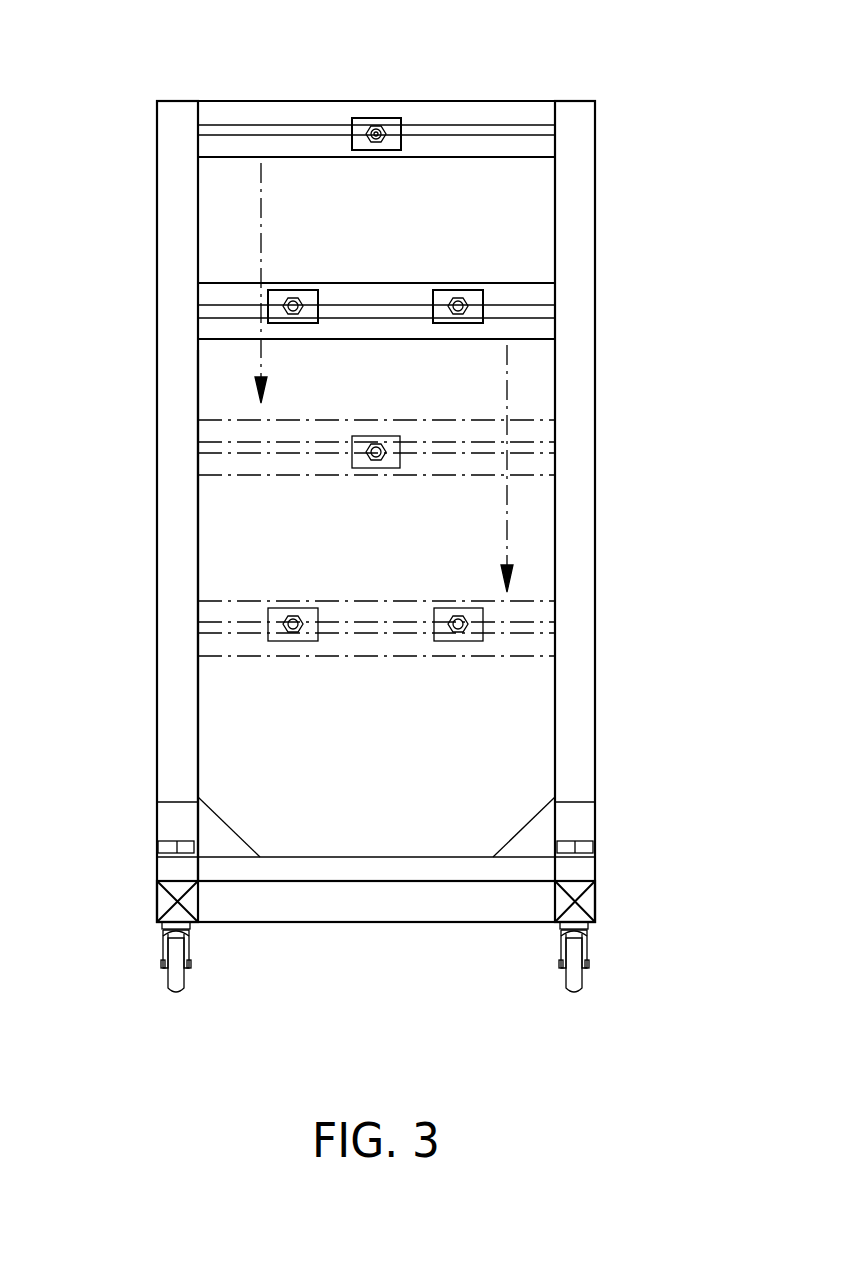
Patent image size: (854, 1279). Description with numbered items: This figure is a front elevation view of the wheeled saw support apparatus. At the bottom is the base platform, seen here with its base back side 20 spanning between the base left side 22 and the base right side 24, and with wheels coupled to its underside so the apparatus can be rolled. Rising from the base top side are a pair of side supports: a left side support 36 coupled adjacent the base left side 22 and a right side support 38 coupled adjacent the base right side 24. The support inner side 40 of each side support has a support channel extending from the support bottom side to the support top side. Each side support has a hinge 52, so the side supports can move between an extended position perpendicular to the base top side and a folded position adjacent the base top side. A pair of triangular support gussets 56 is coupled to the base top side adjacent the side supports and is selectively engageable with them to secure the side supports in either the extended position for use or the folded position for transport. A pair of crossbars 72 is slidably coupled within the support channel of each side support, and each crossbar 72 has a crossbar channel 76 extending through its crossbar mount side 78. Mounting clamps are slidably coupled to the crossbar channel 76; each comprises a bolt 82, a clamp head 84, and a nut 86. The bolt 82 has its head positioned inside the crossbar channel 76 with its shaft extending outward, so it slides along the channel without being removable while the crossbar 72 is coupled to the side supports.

The base back side 20 is at (406, 912).
The base left side 22 is at (157, 900).
The base right side 24 is at (595, 898).
The left side support 36 is at (173, 579).
The right side support 38 is at (595, 660).
The support inner side 40 is at (198, 718).
The hinge 52 is at (162, 826).
The triangular support gusset 56 is at (530, 838).
The crossbar 72 is at (506, 282).
The crossbar channel 76 is at (238, 130).
The crossbar mount side 78 is at (298, 112).
The bolt 82 is at (376, 128).
The clamp head 84 is at (388, 146).
The nut 86 is at (372, 140).